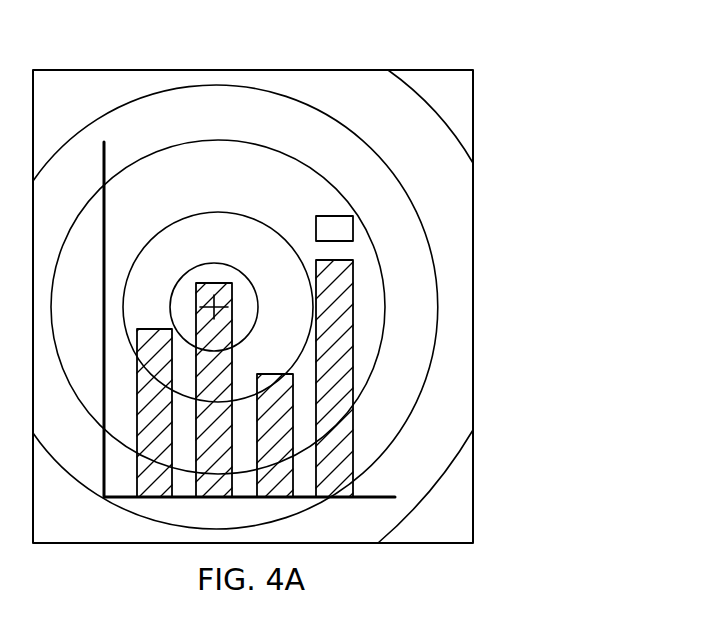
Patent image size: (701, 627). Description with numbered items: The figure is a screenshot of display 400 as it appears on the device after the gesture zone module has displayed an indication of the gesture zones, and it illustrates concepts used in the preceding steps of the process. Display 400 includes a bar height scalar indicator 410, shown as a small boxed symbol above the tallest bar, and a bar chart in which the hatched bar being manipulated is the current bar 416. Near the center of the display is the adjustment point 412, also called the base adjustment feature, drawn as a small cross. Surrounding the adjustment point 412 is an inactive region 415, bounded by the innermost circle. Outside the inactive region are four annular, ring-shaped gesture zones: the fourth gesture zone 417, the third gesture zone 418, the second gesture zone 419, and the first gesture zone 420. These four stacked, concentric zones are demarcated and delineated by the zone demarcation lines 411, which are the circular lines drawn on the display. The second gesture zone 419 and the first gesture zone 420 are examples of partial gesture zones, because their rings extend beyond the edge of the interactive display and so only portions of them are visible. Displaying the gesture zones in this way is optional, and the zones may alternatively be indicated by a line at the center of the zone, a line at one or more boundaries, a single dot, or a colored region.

The display 400 is at (508, 47).
The bar height scalar indicator 410 is at (355, 229).
The zone demarcation lines 411 is at (448, 478).
The adjustment point 412 is at (216, 308).
The inactive region 415 is at (217, 278).
The current bar 416 is at (353, 433).
The fourth gesture zone 417 is at (236, 227).
The third gesture zone 418 is at (248, 160).
The second gesture zone 419 is at (297, 113).
The first gesture zone 420 is at (361, 91).